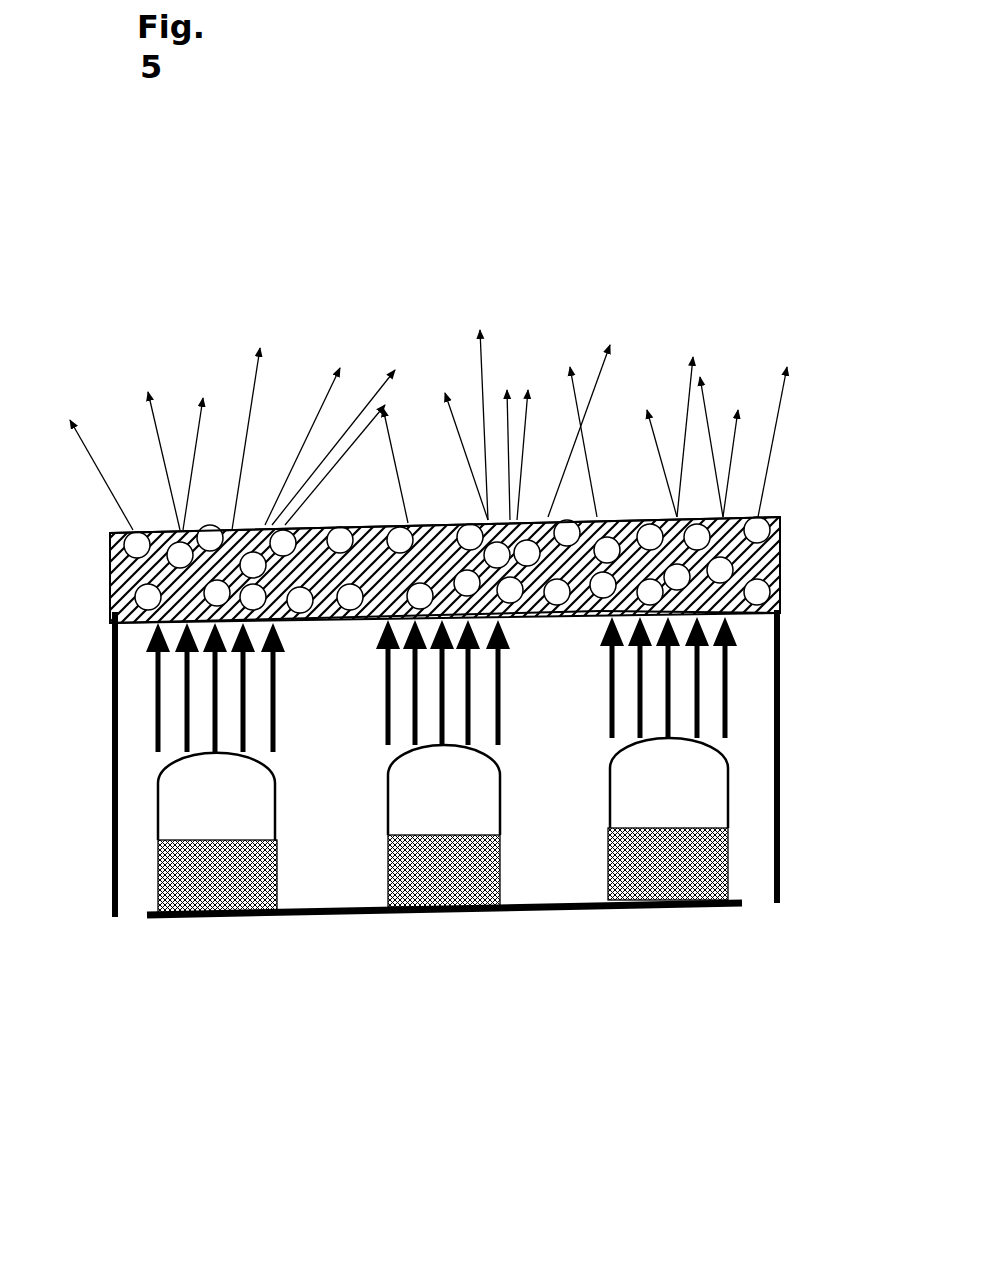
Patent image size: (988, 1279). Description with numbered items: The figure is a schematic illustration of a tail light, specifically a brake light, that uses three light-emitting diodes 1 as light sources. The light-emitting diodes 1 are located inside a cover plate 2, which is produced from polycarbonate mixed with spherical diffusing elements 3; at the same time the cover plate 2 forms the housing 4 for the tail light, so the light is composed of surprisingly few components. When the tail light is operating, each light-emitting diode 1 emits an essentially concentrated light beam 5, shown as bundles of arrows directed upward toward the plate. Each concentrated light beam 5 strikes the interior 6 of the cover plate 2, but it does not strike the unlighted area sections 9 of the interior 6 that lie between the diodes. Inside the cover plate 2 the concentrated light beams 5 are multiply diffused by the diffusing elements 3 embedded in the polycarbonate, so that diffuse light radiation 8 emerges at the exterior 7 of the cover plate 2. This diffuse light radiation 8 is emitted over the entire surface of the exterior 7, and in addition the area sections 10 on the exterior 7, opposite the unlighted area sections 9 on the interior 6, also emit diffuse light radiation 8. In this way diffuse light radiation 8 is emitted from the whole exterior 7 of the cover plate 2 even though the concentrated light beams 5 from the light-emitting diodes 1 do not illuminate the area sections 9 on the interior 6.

The light-emitting diode 1 is at (657, 880).
The cover plate 2 is at (444, 567).
The diffusing elements 3 is at (215, 615).
The housing 4 is at (775, 694).
The concentrated light beam 5 is at (690, 675).
The interior 6 is at (757, 613).
The exterior 7 is at (600, 548).
The diffuse light radiation 8 is at (248, 437).
The unlighted area section 9 is at (523, 617).
The area section 10 is at (170, 625).